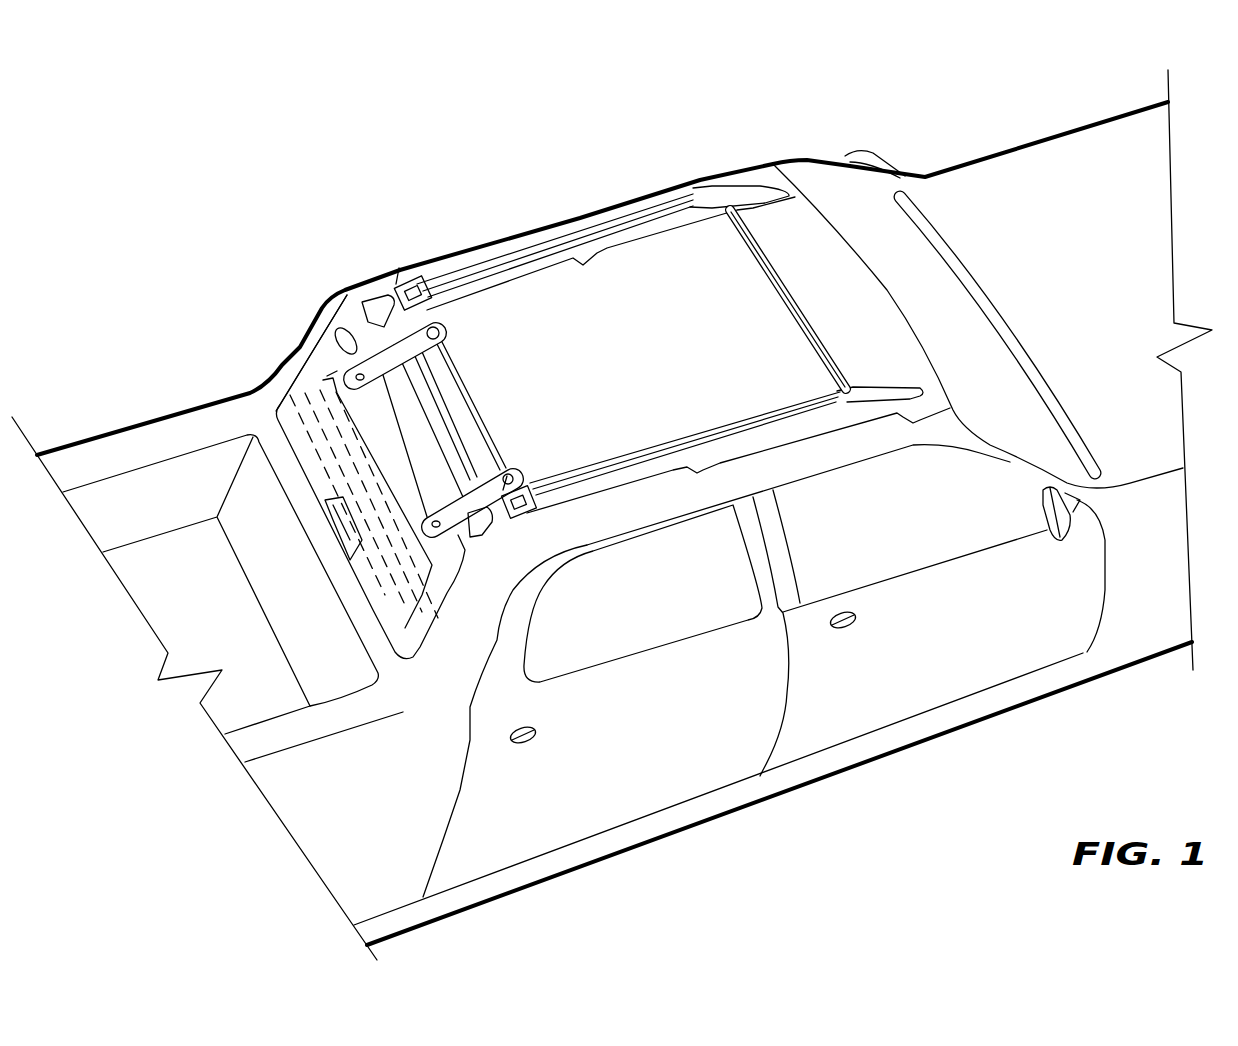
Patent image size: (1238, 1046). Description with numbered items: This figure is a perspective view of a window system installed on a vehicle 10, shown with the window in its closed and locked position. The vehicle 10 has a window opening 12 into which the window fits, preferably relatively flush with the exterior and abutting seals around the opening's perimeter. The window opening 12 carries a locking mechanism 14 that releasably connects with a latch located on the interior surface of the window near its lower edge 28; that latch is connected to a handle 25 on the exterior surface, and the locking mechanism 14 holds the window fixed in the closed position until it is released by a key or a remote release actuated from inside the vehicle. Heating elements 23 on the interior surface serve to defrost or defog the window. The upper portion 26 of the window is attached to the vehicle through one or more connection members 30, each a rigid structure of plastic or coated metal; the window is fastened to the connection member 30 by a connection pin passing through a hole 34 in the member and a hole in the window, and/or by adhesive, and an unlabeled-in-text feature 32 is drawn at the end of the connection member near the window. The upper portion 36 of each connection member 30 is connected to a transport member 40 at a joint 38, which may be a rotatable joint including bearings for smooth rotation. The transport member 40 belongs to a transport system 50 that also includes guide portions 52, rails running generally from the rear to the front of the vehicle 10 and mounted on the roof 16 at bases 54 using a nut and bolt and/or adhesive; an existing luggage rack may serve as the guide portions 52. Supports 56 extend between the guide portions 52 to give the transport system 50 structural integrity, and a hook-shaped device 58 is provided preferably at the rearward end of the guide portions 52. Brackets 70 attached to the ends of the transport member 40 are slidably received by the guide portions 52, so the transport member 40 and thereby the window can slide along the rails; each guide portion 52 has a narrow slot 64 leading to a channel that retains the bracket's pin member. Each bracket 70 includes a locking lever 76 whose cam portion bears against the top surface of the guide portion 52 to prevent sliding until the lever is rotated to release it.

The vehicle 10 is at (943, 740).
The window opening 12 is at (408, 662).
The locking mechanism 14 is at (353, 557).
The roof 16 is at (641, 362).
The heating elements 23 is at (433, 567).
The handle 25 is at (346, 539).
The upper portion 26 is at (337, 297).
The lower edge 28 is at (397, 620).
The connection member 30 is at (420, 409).
The end support bracket 32 is at (345, 330).
The hole 34 is at (350, 373).
The upper portion 36 is at (440, 330).
The joint 38 is at (441, 341).
The transport member 40 is at (483, 397).
The transport system 50 is at (631, 360).
The guide portions 52 is at (630, 215).
The bases 54 is at (350, 330).
The supports 56 is at (797, 305).
The device 58 is at (370, 300).
The narrow slot 64 is at (687, 199).
The brackets 70 is at (403, 275).
The locking lever 76 is at (398, 281).